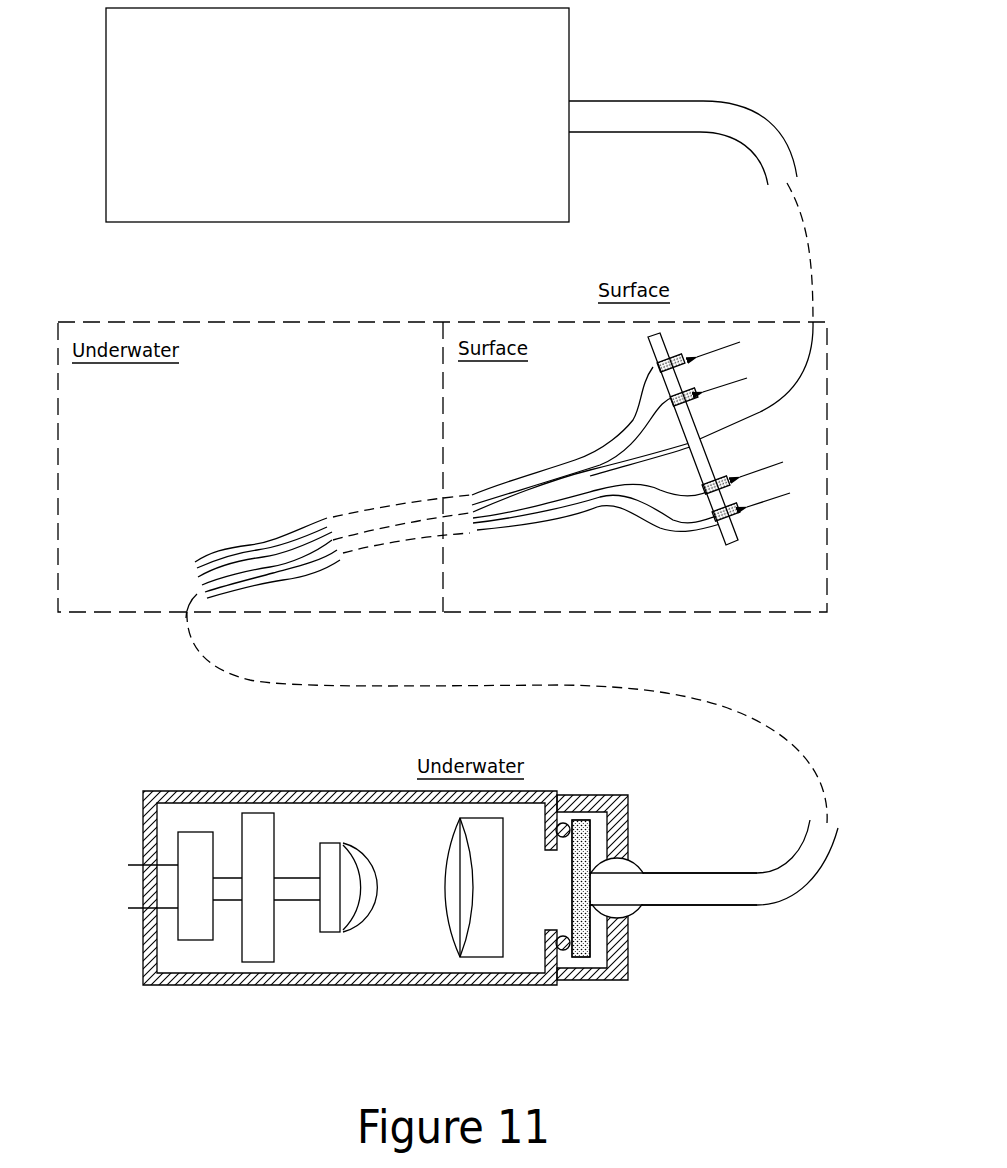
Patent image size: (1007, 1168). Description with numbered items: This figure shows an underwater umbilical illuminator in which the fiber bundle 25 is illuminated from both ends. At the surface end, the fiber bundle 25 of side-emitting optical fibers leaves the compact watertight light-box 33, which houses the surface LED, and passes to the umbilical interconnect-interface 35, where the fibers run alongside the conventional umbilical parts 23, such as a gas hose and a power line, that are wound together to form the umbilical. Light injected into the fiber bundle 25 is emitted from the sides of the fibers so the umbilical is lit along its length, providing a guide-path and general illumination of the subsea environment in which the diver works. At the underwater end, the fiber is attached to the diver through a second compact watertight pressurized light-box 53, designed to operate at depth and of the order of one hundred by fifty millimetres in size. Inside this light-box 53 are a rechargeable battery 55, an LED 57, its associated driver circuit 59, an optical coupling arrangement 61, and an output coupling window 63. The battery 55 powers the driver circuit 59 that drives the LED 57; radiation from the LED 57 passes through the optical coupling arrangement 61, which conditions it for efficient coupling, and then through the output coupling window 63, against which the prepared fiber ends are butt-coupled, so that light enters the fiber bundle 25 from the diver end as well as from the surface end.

The umbilical parts 23 is at (300, 557).
The fiber bundle 25 is at (640, 120).
The light-box 33 is at (317, 224).
The umbilical interconnect-interface 35 is at (728, 540).
The light-box 53 is at (255, 780).
The rechargeable battery 55 is at (192, 930).
The LED 57 is at (330, 925).
The driver circuit 59 is at (258, 943).
The optical coupling arrangement 61 is at (485, 950).
The output coupling window 63 is at (583, 942).